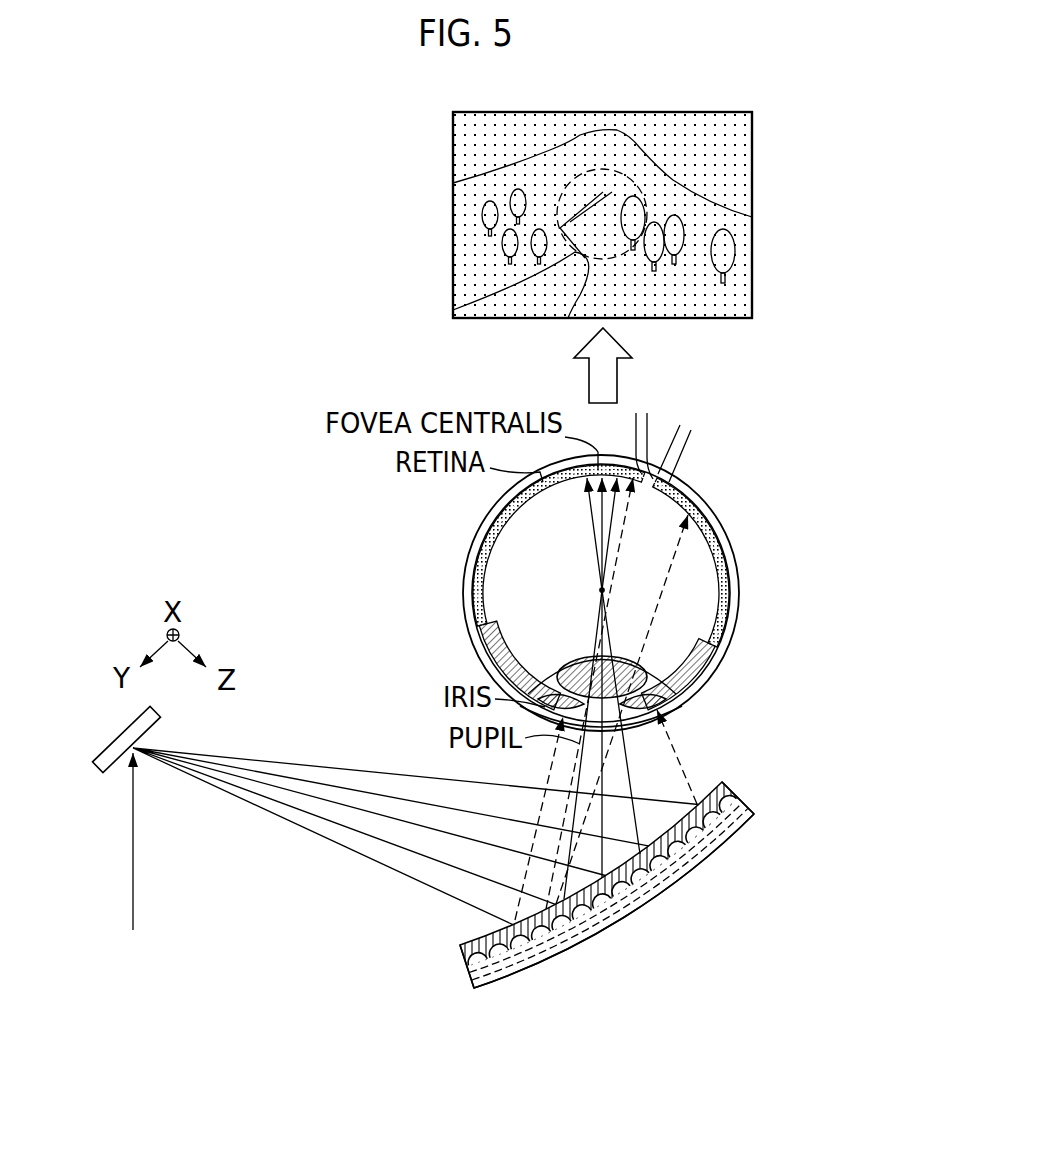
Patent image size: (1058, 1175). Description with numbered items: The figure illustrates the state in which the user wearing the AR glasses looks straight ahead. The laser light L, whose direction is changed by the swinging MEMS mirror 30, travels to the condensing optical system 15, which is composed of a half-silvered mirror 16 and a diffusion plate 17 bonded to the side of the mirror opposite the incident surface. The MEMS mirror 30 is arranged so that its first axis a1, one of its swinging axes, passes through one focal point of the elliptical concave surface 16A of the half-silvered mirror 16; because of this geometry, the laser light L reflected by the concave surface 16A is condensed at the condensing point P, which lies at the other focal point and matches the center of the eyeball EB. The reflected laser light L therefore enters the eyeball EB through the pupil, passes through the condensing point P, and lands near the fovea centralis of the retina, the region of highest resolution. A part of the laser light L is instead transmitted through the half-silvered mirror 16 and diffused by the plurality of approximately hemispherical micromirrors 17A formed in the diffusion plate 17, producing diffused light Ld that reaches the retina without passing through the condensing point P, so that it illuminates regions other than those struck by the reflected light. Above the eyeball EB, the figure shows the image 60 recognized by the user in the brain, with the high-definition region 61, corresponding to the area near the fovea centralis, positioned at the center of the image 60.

The image 60 is at (688, 112).
The high-definition region 61 is at (583, 170).
The MEMS mirror 30 is at (153, 718).
The condensing optical system 15 is at (629, 854).
The half-silvered mirror 16 is at (733, 792).
The concave surface 16A is at (722, 781).
The diffusion plate 17 is at (740, 830).
The micromirror 17A is at (480, 943).
The eyeball EB is at (430, 504).
The condensing point P is at (600, 591).
The diffused light Ld is at (652, 597).
The laser light L is at (372, 765).
The first axis a1 is at (118, 743).